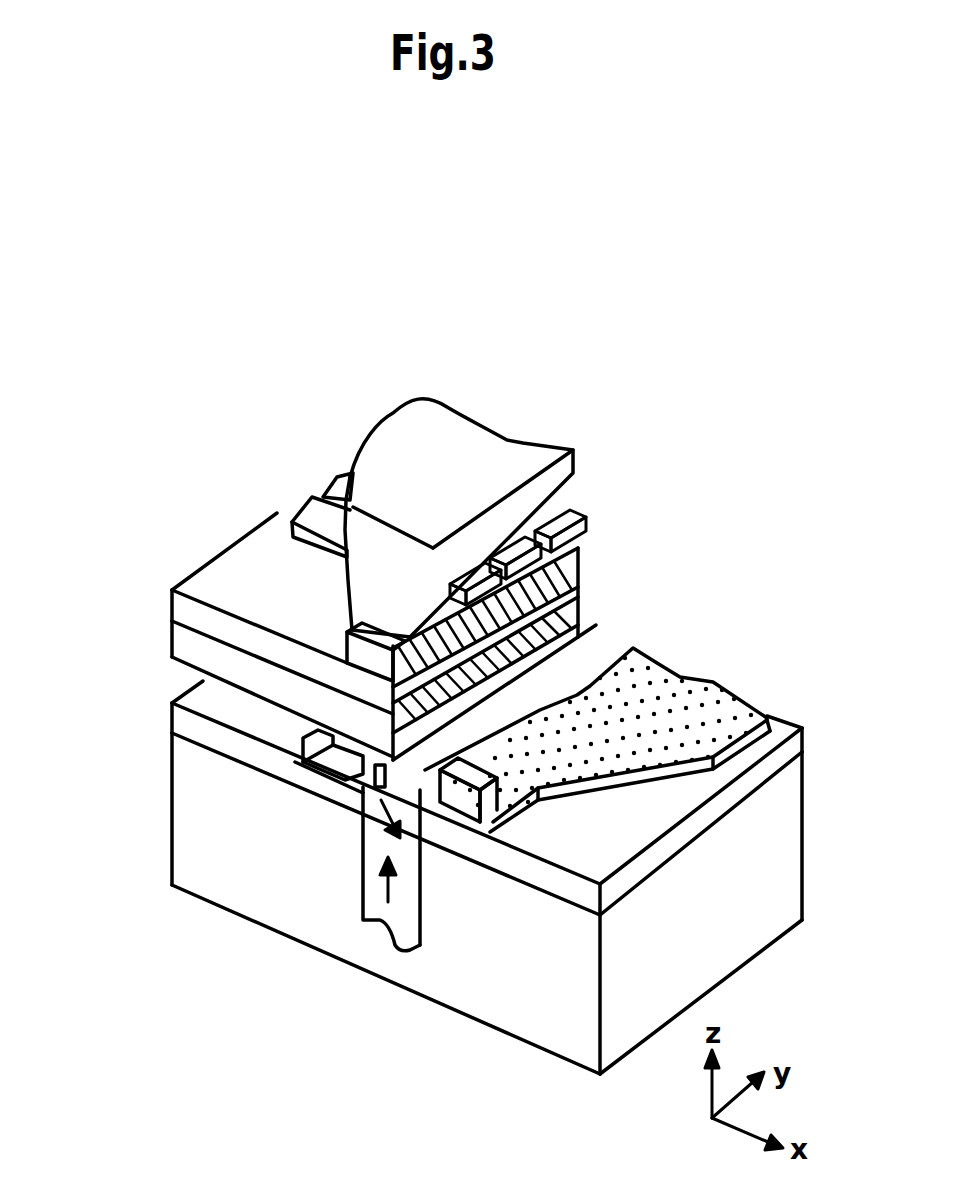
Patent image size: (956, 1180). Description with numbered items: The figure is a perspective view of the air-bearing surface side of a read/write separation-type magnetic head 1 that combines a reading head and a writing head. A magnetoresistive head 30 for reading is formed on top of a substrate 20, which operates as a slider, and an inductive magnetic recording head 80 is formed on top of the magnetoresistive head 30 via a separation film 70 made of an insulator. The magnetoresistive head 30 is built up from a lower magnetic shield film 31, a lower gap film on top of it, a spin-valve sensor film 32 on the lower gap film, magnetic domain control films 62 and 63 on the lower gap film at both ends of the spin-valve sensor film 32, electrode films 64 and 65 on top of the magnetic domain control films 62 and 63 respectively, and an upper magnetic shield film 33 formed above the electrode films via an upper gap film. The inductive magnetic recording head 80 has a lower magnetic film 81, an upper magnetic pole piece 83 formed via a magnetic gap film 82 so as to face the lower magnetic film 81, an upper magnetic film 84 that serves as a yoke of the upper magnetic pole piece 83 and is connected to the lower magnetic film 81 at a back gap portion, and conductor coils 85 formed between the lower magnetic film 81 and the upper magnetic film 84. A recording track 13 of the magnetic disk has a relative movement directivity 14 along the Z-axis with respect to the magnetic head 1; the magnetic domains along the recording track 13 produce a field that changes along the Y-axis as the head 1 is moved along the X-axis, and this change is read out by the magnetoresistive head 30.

The read/write separation-type magnetic head 1 is at (160, 314).
The recording track 13 is at (363, 892).
The relative movement directivity 14 is at (420, 893).
The substrate 20 is at (737, 945).
The magnetoresistive head 30 is at (121, 622).
The lower magnetic shield film 31 is at (766, 779).
The spin-valve sensor film 32 is at (367, 797).
The upper magnetic shield film 33 is at (174, 657).
The magnetic domain control film 62 is at (320, 770).
The magnetic domain control film 63 is at (427, 817).
The electrode film 64 is at (586, 636).
The electrode film 65 is at (720, 702).
The separation film 70 is at (172, 625).
The inductive magnetic recording head 80 is at (121, 394).
The lower magnetic film 81 is at (207, 583).
The magnetic gap film 82 is at (347, 660).
The upper magnetic pole piece 83 is at (350, 630).
The upper magnetic film 84 is at (490, 447).
The conductor coils 85 is at (292, 512).